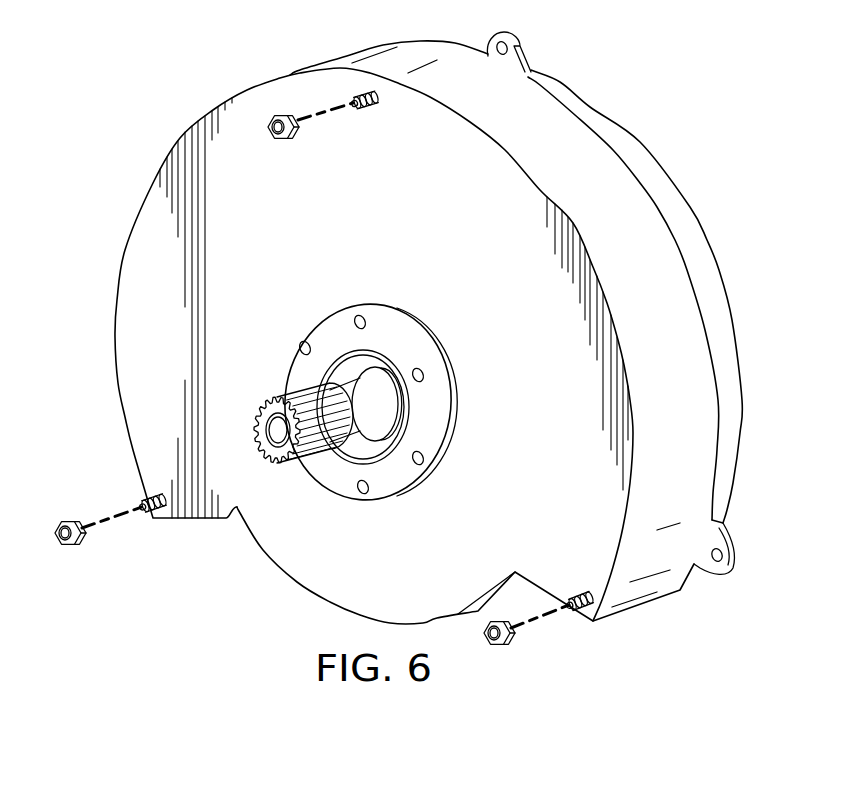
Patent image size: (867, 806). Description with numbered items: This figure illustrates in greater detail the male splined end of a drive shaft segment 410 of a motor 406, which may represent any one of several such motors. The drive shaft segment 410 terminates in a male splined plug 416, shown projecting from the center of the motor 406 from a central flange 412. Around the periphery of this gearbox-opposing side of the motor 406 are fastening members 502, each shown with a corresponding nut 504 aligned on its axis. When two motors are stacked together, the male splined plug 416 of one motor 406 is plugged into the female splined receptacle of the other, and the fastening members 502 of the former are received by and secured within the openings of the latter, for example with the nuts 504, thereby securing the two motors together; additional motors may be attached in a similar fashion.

The motor 406 is at (598, 50).
The drive shaft segment 410 is at (351, 394).
The flange 412 is at (388, 336).
The male splined plug 416 is at (279, 398).
The fastening members 502 is at (371, 109).
The nuts 504 is at (287, 140).